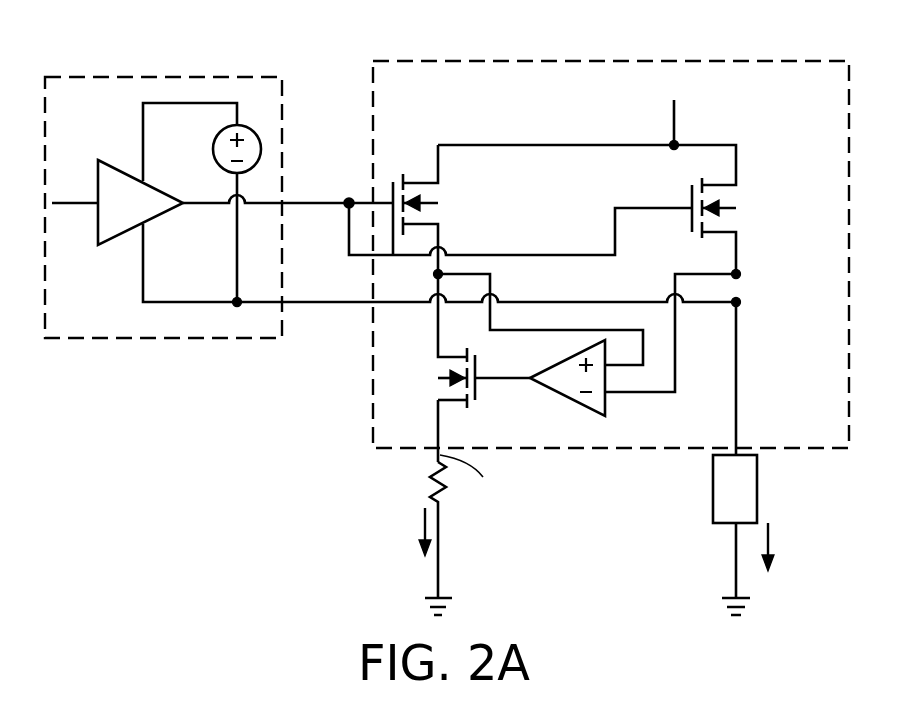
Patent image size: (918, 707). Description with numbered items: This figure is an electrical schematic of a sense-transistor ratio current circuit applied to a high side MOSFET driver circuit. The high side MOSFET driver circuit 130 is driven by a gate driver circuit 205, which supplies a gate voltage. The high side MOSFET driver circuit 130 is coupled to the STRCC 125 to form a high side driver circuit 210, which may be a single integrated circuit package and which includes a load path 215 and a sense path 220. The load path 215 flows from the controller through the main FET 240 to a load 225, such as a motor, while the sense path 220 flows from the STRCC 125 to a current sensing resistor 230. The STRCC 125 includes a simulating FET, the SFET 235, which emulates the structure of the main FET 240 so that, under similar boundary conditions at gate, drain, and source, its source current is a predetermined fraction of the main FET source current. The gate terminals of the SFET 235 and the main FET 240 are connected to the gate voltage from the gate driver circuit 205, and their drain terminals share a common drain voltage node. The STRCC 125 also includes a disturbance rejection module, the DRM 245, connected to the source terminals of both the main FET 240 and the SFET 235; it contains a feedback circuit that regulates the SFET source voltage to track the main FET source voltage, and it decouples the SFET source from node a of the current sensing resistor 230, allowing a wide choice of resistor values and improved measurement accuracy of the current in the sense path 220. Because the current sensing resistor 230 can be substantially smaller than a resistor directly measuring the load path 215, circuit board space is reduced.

The gate driver circuit 205 is at (185, 77).
The high side driver circuit 210 is at (530, 60).
The STRCC 125 is at (416, 163).
The high side MOSFET driver circuit 130 is at (650, 128).
The simulating FET 235 is at (440, 212).
The main FET 240 is at (738, 222).
The disturbance rejection module 245 is at (430, 347).
The current sensing resistor 230 is at (428, 470).
The sense path 220 is at (420, 525).
The load 225 is at (712, 473).
The load path 215 is at (770, 537).